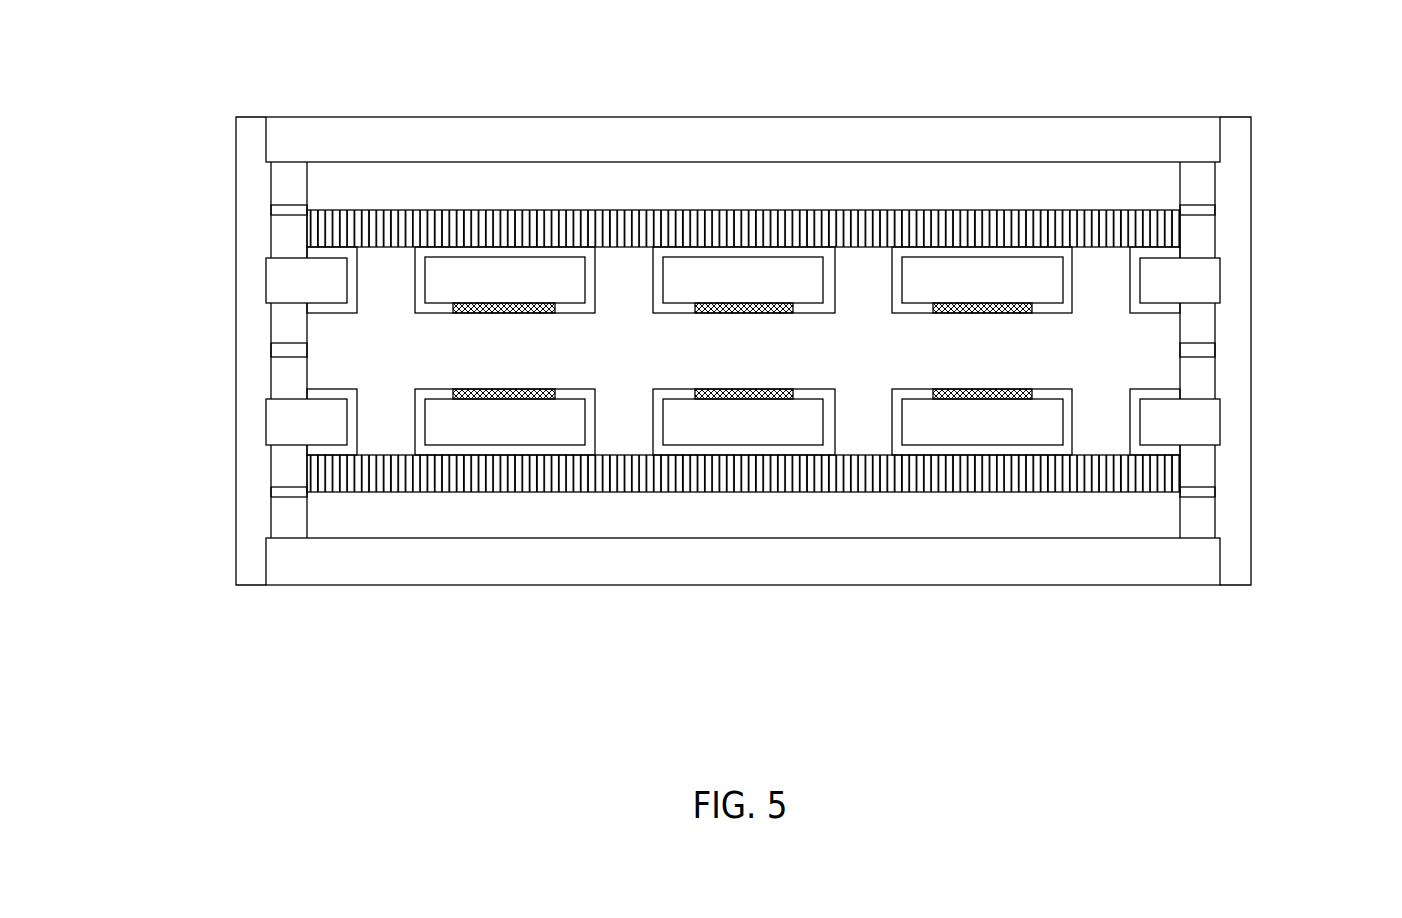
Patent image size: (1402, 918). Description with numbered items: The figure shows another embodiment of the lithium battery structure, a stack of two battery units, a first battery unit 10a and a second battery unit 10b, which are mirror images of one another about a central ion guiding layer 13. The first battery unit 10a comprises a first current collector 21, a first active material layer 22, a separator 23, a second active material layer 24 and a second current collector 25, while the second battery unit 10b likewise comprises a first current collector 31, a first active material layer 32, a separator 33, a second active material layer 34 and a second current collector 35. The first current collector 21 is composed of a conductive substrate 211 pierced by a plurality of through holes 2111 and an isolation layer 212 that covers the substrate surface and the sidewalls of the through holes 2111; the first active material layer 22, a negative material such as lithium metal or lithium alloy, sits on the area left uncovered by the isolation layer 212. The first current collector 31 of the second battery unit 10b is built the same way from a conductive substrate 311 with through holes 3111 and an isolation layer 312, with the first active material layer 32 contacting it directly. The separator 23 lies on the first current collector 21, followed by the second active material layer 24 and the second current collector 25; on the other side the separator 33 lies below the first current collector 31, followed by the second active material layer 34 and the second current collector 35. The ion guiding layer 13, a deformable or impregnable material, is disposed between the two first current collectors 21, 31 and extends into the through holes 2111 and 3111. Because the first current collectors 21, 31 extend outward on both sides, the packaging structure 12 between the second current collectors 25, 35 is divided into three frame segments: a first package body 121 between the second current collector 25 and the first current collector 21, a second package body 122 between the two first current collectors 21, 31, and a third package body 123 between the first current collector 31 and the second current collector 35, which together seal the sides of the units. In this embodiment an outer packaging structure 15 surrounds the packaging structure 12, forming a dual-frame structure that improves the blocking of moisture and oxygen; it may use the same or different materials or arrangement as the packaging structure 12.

The first battery unit 10a is at (828, 203).
The second battery unit 10b is at (828, 503).
The packaging structure 12 is at (646, 350).
The first package body 121 is at (272, 188).
The second package body 122 is at (272, 330).
The third package body 123 is at (686, 477).
The ion guiding layer 13 is at (385, 440).
The outer packaging structure 15 is at (243, 569).
The first current collector 21 is at (789, 203).
The conductive substrate 211 is at (755, 258).
The through holes 2111 is at (860, 258).
The isolation layer 212 is at (801, 190).
The first active material layer 22 is at (1010, 316).
The separator 23 is at (1168, 236).
The second active material layer 24 is at (1165, 195).
The second current collector 25 is at (1222, 140).
The first current collector 31 is at (788, 503).
The conductive substrate 311 is at (753, 443).
The through holes 3111 is at (862, 442).
The isolation layer 312 is at (801, 514).
The first active material layer 32 is at (1003, 387).
The separator 33 is at (1170, 467).
The second active material layer 34 is at (1163, 507).
The second current collector 35 is at (1222, 565).